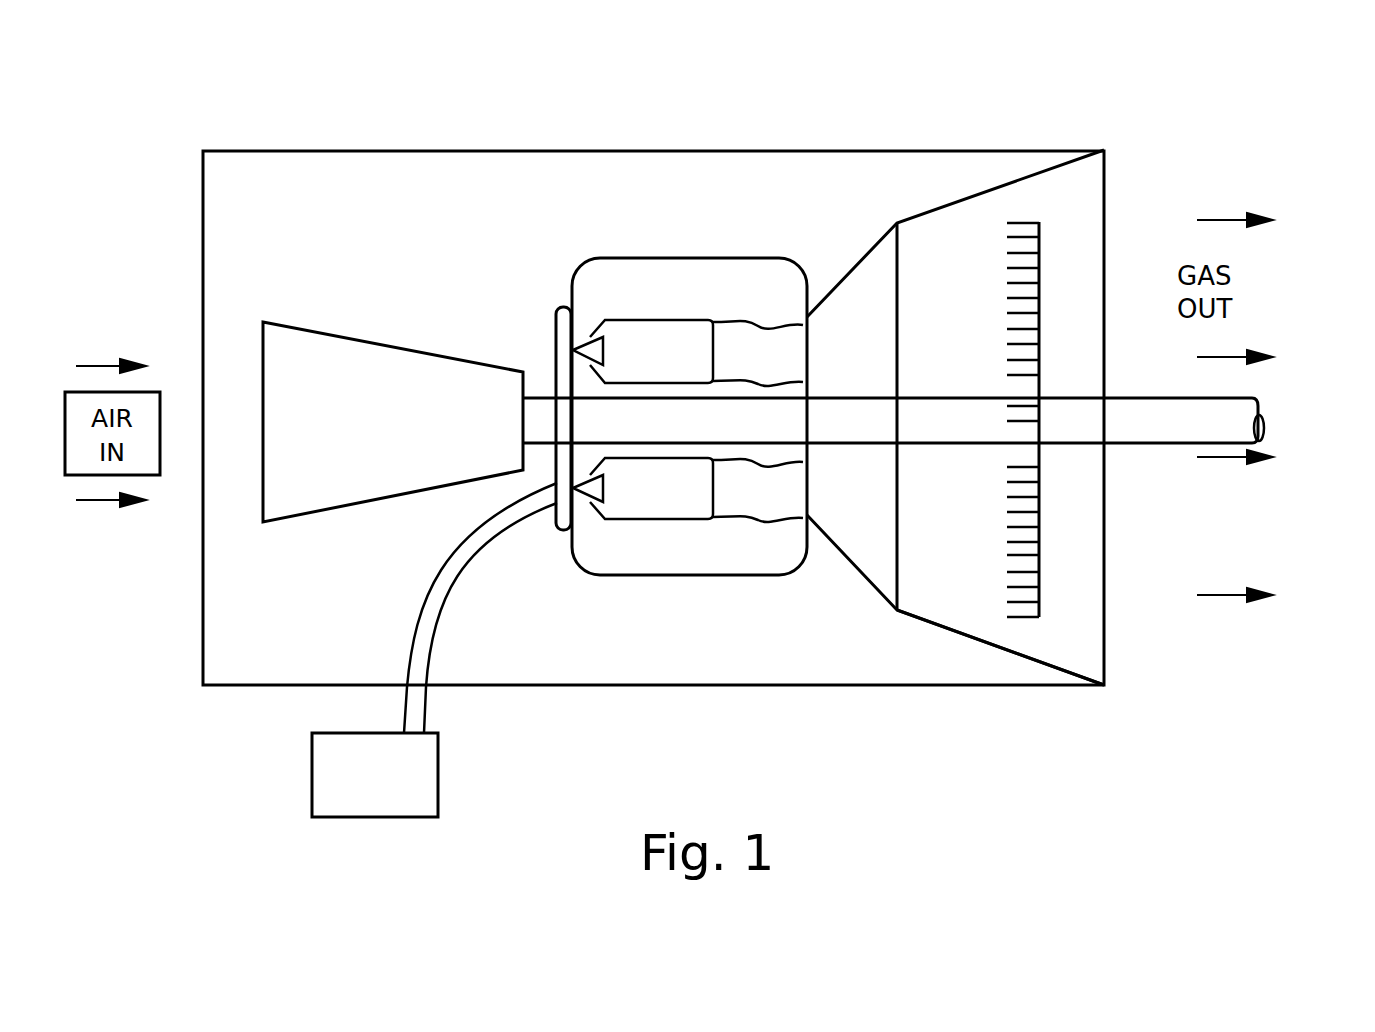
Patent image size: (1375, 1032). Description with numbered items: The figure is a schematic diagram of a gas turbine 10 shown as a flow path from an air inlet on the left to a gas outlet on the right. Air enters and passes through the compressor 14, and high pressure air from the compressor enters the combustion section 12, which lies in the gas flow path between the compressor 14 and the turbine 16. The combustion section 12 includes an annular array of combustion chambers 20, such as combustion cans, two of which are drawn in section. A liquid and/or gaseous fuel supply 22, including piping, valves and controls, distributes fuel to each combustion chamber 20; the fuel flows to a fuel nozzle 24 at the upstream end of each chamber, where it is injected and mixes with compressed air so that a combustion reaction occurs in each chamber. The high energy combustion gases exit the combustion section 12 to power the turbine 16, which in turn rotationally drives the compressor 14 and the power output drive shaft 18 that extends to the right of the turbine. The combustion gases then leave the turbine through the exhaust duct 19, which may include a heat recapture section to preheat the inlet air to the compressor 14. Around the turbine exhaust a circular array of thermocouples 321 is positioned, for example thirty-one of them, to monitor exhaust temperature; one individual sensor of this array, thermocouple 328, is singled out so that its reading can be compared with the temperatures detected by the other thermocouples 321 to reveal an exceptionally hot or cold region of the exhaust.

The gas turbine 10 is at (358, 142).
The combustion section 12 is at (720, 257).
The compressor 14 is at (392, 438).
The turbine 16 is at (868, 438).
The power output drive shaft 18 is at (1263, 424).
The exhaust duct 19 is at (957, 600).
The combustion chamber 20 is at (650, 330).
The fuel supply 22 is at (557, 327).
The fuel nozzle 24 is at (615, 330).
The thermocouples 321 is at (1040, 565).
The thermocouple 27 328 is at (1031, 222).